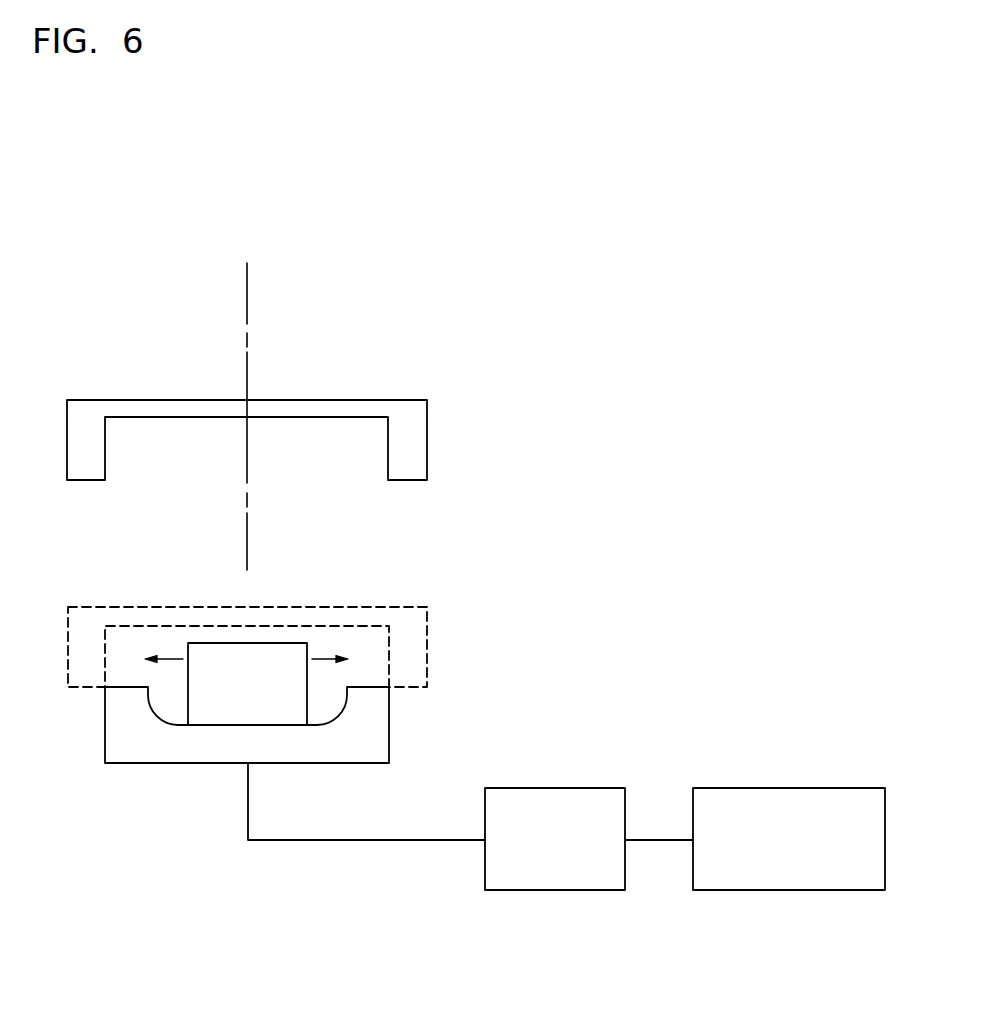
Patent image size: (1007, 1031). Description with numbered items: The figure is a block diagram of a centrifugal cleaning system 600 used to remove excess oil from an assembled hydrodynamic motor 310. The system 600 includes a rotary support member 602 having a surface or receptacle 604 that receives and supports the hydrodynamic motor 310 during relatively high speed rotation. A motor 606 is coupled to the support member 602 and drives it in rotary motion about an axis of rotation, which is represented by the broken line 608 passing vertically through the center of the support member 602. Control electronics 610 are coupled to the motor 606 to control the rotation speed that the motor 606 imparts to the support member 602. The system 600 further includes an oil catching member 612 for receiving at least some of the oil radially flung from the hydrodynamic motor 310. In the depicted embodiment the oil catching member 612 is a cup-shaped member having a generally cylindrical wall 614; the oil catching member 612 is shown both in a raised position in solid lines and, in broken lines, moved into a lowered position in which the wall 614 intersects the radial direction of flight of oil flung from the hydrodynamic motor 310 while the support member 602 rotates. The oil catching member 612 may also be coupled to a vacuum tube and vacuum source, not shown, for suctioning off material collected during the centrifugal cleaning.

The centrifugal cleaning system 600 is at (600, 470).
The rotary support member 602 is at (378, 737).
The receptacle 604 is at (180, 718).
The motor 606 is at (567, 797).
The axis of rotation 608 is at (247, 300).
The control electronics 610 is at (808, 797).
The oil catching member 612 is at (427, 445).
The cylindrical wall 614 is at (114, 677).
The hydrodynamic motor 310 is at (272, 690).